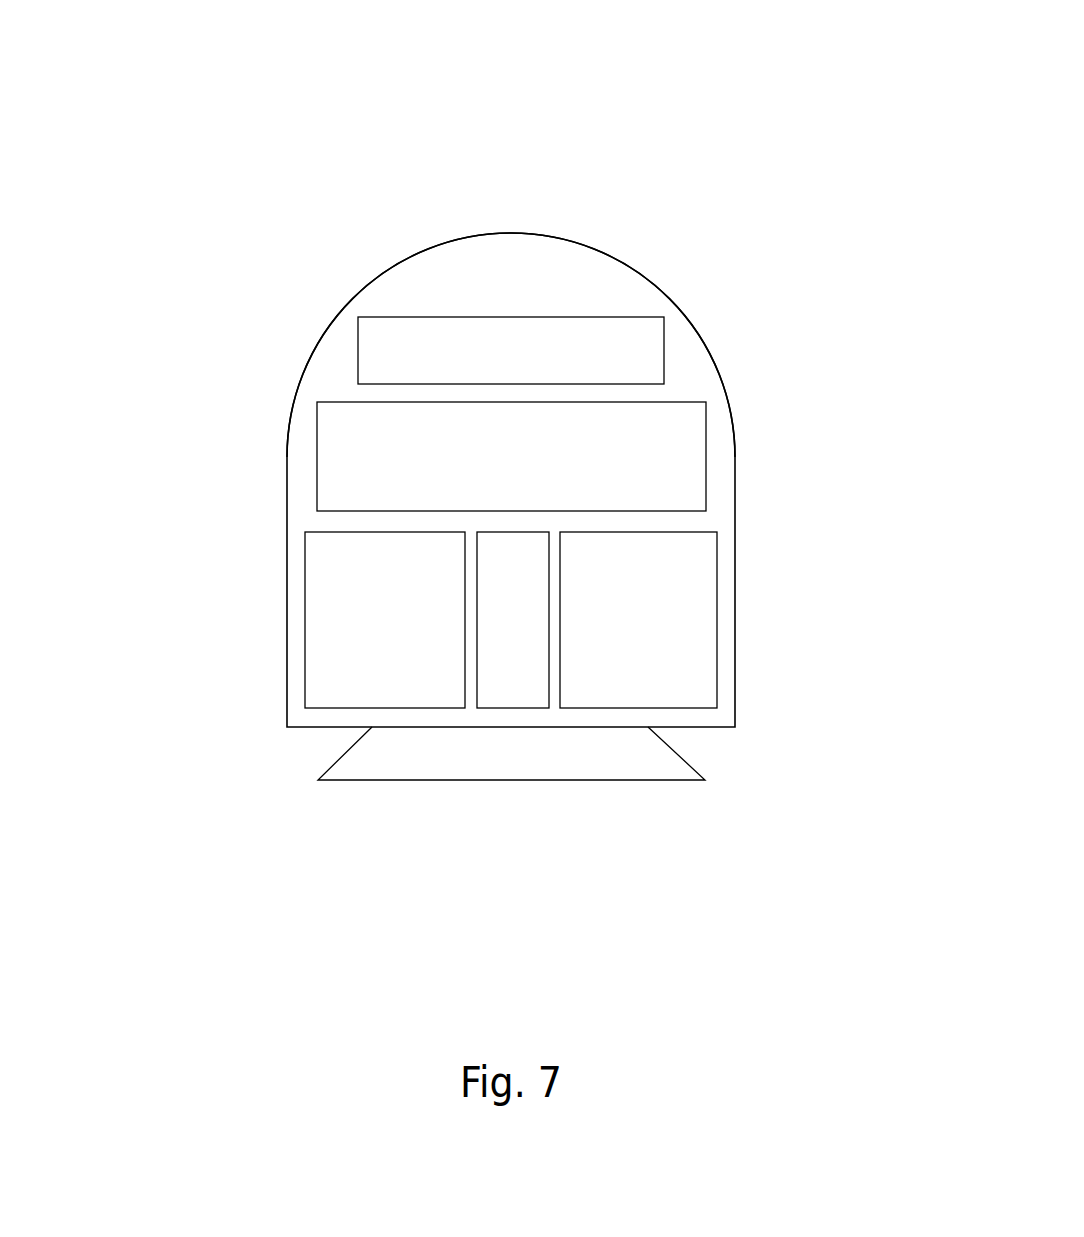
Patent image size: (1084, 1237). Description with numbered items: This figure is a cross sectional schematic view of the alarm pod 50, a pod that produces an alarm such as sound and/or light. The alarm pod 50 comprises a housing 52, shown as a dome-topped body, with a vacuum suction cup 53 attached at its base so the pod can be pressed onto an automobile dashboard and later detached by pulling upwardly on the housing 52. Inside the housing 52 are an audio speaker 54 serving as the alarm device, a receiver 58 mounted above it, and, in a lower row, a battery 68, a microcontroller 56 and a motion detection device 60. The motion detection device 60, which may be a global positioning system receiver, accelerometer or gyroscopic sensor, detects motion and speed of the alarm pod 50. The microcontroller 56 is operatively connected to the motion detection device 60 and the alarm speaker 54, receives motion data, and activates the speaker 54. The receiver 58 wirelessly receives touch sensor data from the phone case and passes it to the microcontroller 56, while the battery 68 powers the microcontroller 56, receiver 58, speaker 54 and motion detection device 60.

The alarm pod 50 is at (303, 148).
The housing 52 is at (513, 260).
The vacuum suction cup 53 is at (450, 757).
The audio speaker 54 is at (395, 456).
The microcontroller 56 is at (508, 647).
The receiver 58 is at (597, 347).
The motion detection device 60 is at (648, 603).
The battery 68 is at (343, 607).